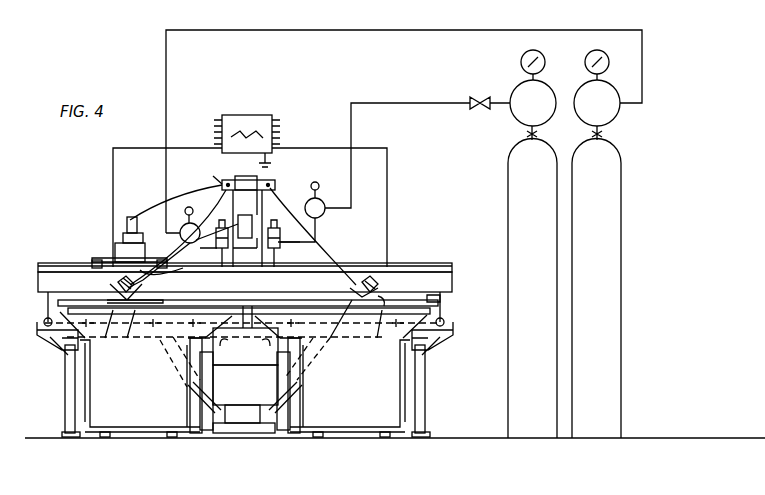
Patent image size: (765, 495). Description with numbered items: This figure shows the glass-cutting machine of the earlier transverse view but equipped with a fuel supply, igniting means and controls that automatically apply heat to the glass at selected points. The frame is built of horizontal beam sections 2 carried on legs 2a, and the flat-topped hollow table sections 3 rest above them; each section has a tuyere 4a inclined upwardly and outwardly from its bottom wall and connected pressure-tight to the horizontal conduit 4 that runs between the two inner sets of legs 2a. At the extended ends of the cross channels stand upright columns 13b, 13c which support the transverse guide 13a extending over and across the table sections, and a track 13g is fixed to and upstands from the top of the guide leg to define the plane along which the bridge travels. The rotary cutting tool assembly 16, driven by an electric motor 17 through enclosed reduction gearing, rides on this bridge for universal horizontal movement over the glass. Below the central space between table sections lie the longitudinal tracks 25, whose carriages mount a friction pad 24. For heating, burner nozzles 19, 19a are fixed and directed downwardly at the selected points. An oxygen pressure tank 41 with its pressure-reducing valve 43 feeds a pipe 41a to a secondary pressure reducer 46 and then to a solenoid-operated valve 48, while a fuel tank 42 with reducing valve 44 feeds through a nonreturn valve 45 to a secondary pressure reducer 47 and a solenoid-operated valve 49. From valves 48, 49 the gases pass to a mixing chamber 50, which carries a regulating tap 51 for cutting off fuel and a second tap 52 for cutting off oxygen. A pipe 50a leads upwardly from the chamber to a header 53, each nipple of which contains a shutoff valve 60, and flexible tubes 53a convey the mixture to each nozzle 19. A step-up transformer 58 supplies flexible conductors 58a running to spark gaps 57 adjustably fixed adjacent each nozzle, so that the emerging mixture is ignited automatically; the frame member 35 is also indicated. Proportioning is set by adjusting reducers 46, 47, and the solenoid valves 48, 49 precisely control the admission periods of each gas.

The beam section 2 is at (50, 343).
The leg 2a is at (65, 407).
The table section 3 is at (382, 328).
The conduit 4 is at (245, 420).
The tuyere 4a is at (191, 396).
The guide 13a is at (38, 276).
The column 13b is at (441, 302).
The column 13c is at (58, 303).
The track 13g is at (52, 262).
The rotary cutting tool assembly 16 is at (120, 246).
The electric motor 17 is at (126, 222).
The burner nozzle 19 is at (352, 326).
The burner nozzle 19a is at (152, 326).
The friction pad 24 is at (246, 312).
The track 25 is at (262, 341).
The frame 35 is at (137, 432).
The oxygen pressure tank 41 is at (610, 203).
The pipe 41a is at (313, 31).
The fuel pressure tank 42 is at (514, 218).
The pressure-reducing valve 43 is at (613, 112).
The pressure-reducing valve 44 is at (517, 112).
The nonreturn valve 45 is at (478, 96).
The secondary pressure reducer 46 is at (185, 209).
The secondary pressure reducer 47 is at (320, 197).
The solenoid-operated valve 48 is at (185, 243).
The solenoid-operated valve 49 is at (283, 243).
The mixing chamber 50 is at (270, 204).
The pipe 50a is at (250, 176).
The regulating tap 51 is at (254, 228).
The tap 52 is at (218, 186).
The header 53 is at (264, 180).
The flexible tube 53a is at (337, 262).
The spark gap 57 is at (392, 282).
The step-up transformer 58 is at (255, 117).
The flexible conductor 58a is at (112, 157).
The shutoff valve 60 is at (220, 180).